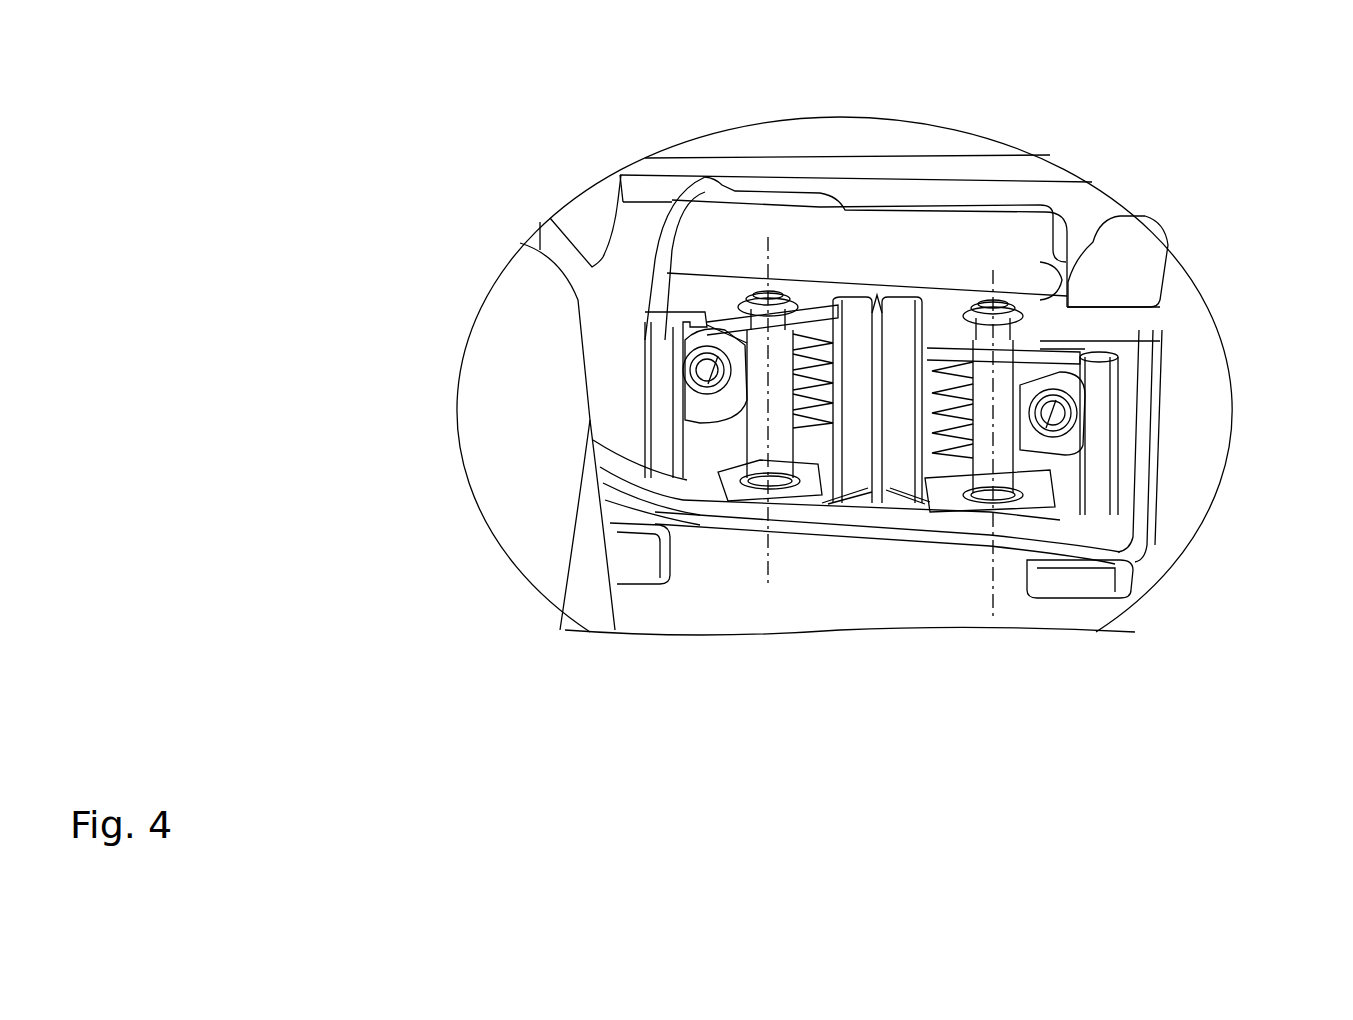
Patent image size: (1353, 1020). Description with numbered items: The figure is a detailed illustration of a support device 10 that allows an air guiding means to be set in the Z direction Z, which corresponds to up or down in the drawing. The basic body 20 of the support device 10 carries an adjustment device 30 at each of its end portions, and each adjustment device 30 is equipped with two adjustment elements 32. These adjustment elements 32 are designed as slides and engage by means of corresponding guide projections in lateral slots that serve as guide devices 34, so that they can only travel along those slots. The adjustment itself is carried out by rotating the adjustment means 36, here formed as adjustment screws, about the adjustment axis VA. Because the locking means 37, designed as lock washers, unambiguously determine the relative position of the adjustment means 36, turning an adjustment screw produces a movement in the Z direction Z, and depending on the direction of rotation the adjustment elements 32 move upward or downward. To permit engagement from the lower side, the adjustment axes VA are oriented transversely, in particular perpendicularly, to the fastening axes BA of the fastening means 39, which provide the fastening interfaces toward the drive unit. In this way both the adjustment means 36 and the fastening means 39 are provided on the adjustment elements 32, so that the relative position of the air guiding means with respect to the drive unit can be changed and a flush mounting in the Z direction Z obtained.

The support device 10 is at (250, 125).
The basic body 20 is at (487, 408).
The adjustment device 30 is at (1133, 335).
The adjustment element 32 is at (752, 407).
The guide device 34 is at (853, 337).
The adjustment means 36 is at (780, 483).
The locking means 37 is at (745, 302).
The fastening means 39 is at (692, 372).
The fastening axis BA is at (688, 408).
The adjustment axis VA is at (866, 486).
The Z direction Z is at (993, 557).